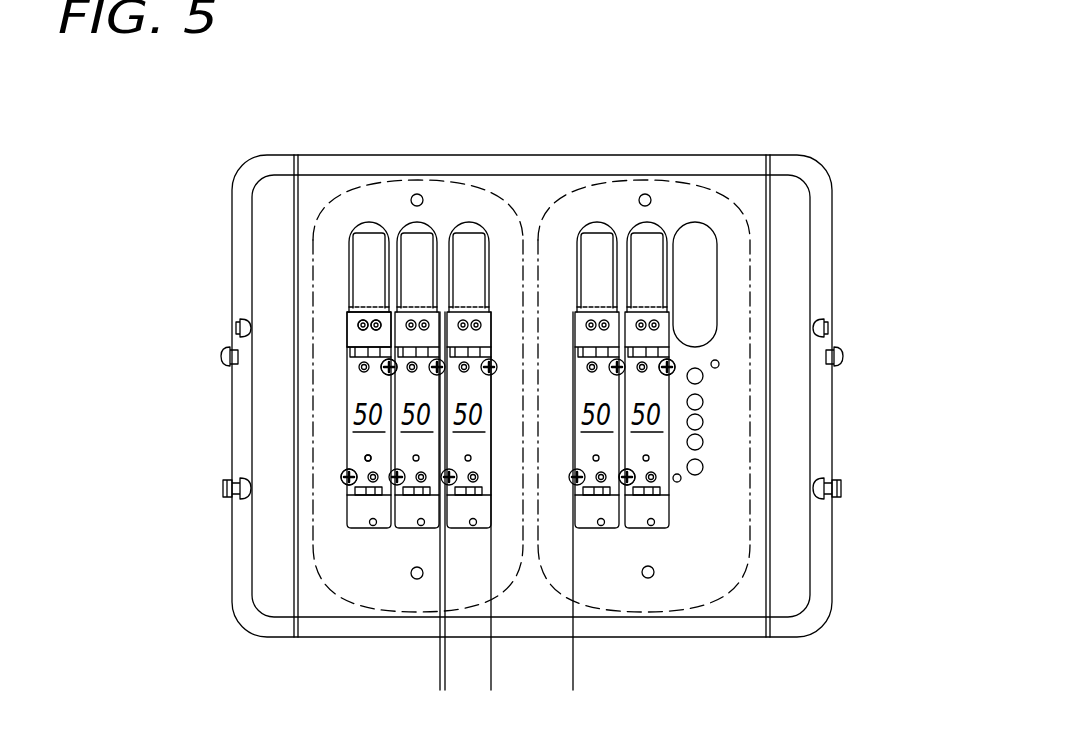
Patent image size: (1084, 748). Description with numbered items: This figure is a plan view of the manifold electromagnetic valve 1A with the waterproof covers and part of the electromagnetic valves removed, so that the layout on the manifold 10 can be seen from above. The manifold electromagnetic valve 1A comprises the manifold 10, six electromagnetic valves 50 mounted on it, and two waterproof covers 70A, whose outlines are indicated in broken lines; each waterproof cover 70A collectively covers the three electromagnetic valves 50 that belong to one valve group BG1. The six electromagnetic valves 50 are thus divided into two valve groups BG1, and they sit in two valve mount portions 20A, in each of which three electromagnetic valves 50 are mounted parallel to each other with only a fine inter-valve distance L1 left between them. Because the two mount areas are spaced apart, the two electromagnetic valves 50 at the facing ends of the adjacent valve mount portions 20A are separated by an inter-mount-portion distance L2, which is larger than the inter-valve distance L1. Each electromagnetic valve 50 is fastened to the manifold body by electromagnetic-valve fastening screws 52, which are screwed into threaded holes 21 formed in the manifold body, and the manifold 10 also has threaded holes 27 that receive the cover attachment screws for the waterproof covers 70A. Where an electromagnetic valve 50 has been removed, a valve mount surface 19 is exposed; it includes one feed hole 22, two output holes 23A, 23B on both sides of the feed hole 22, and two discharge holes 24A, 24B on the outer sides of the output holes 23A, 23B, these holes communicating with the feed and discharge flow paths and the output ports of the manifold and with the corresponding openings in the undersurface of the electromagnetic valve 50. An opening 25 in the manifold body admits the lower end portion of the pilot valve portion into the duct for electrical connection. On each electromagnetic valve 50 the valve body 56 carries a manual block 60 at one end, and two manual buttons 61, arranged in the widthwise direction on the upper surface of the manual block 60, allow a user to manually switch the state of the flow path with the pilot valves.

The manifold electromagnetic valve 1A is at (562, 89).
The manifold 10 is at (494, 130).
The waterproof cover 70A is at (336, 170).
The valve mount portion 20A is at (392, 170).
The threaded hole 27 is at (417, 194).
The electromagnetic valve 50 is at (508, 375).
The opening 25 is at (704, 236).
The manual button 61 is at (375, 320).
The manual block 60 is at (352, 333).
The electromagnetic-valve fastening screw 52 is at (384, 372).
The valve body 56 is at (360, 452).
The threaded hole 21 is at (721, 364).
The discharge hole 24A is at (696, 376).
The output hole 23A is at (696, 402).
The feed hole 22 is at (696, 422).
The output hole 23B is at (696, 442).
The discharge hole 24B is at (696, 468).
The valve mount surface 19 is at (704, 516).
The valve group BG1 is at (366, 561).
The inter-valve distance L1 is at (453, 687).
The inter-mount-portion distance L2 is at (565, 687).